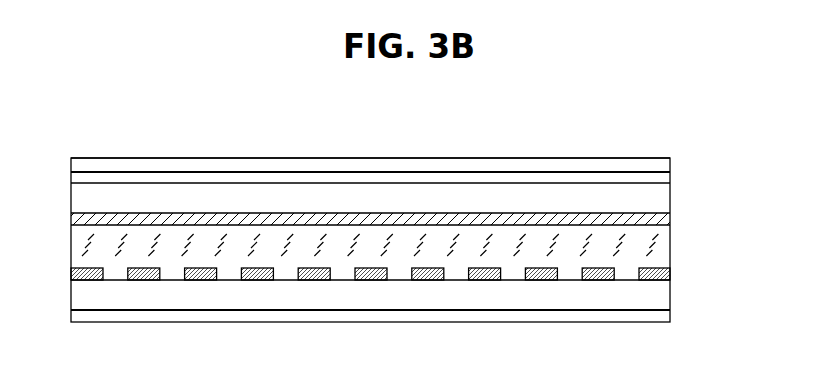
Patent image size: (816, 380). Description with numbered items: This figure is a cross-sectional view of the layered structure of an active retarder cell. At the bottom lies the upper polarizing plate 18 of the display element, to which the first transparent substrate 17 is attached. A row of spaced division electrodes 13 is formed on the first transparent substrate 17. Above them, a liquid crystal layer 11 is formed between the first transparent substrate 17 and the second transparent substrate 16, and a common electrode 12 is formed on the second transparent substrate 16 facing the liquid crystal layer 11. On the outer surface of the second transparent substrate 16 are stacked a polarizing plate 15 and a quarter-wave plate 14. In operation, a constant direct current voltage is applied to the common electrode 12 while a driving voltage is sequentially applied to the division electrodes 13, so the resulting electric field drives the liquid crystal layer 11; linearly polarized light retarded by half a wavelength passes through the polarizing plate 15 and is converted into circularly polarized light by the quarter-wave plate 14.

The liquid crystal layer 11 is at (665, 247).
The common electrode 12 is at (665, 220).
The division electrodes 13 is at (663, 274).
The λ/4 plate 14 is at (665, 163).
The polarizing plate 15 is at (665, 179).
The second transparent substrate 16 is at (665, 199).
The first transparent substrate 17 is at (665, 294).
The upper polarizing plate 18 is at (665, 316).